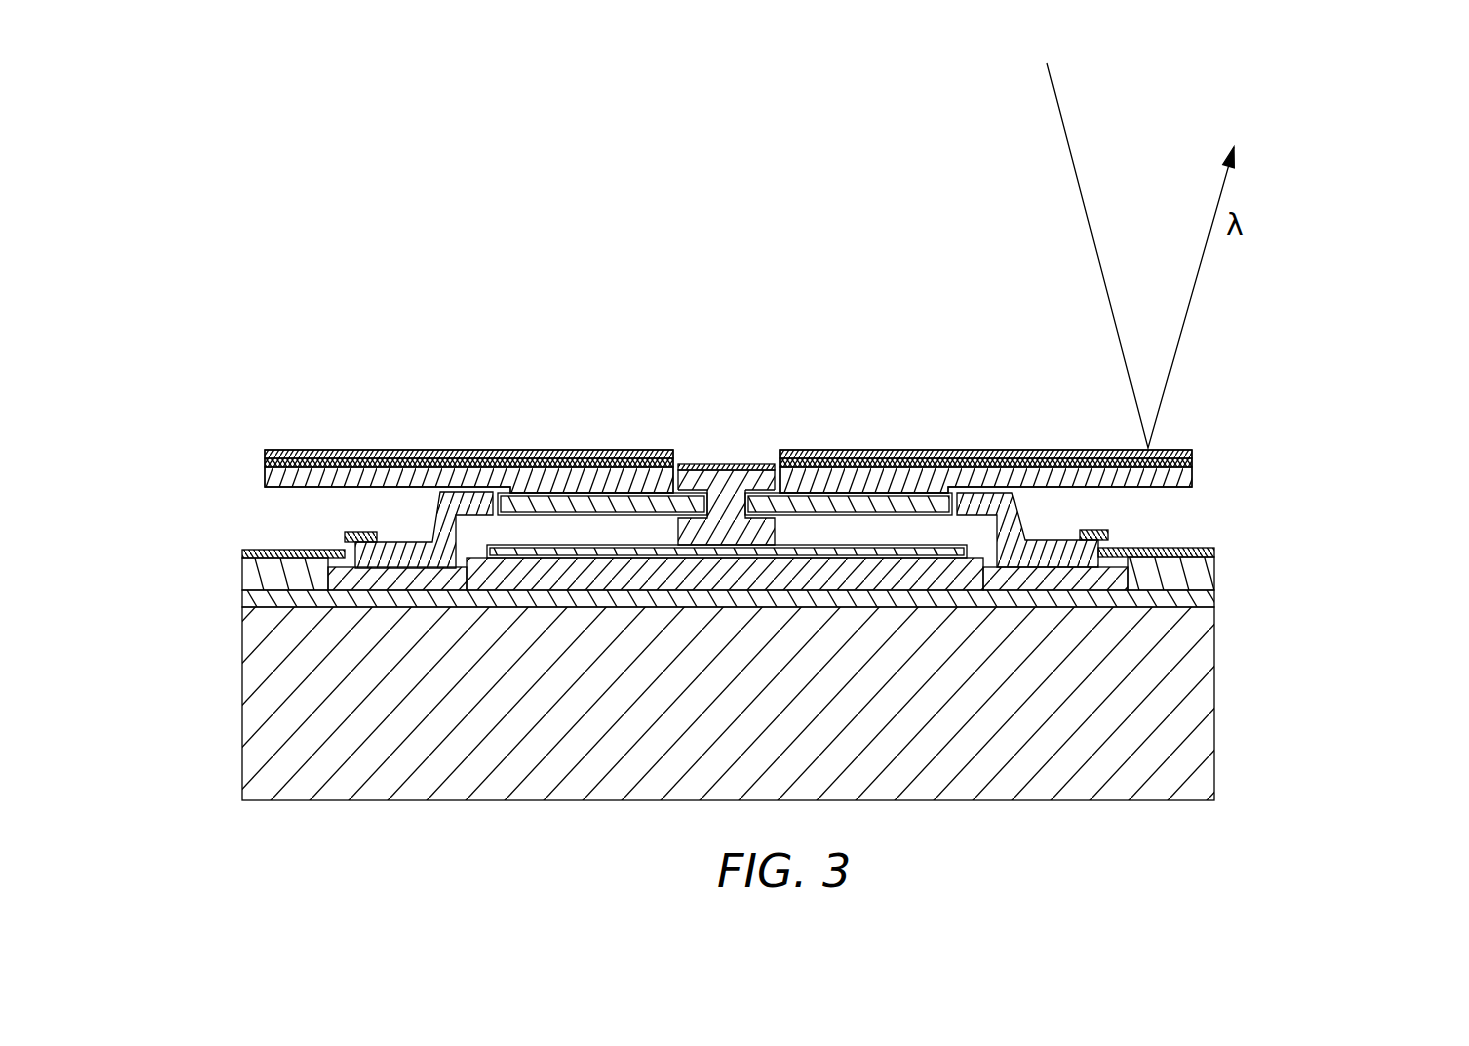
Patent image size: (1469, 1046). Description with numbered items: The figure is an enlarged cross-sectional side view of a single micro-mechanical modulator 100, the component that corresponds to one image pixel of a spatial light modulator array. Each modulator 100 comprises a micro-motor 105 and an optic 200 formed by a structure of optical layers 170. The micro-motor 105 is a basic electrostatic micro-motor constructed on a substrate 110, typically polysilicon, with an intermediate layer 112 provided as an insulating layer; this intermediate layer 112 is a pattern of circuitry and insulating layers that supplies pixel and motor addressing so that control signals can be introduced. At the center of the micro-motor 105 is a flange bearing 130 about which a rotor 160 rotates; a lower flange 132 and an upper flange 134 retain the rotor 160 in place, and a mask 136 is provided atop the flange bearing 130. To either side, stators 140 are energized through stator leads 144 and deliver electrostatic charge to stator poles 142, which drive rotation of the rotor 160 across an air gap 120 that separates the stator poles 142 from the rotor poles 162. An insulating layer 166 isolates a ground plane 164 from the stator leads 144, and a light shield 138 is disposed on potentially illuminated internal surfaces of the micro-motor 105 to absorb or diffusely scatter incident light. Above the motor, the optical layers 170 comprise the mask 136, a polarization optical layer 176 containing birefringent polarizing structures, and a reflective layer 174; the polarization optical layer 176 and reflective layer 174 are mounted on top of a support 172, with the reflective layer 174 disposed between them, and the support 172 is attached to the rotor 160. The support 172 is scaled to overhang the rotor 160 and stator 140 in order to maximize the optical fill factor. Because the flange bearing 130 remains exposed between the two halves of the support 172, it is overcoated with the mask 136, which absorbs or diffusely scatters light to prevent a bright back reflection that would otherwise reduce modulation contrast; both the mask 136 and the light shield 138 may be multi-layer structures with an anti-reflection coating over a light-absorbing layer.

The modulator 100 is at (337, 200).
The micro-motor 105 is at (1353, 485).
The substrate 110 is at (1210, 663).
The intermediate layer 112 is at (1215, 597).
The air gap 120 is at (1044, 414).
The flange bearing 130 is at (751, 462).
The lower flange 132 is at (697, 532).
The upper flange 134 is at (700, 464).
The mask 136 is at (737, 464).
The light shield 138 is at (242, 553).
The stator 140 is at (1088, 540).
The stator pole 142 is at (970, 515).
The stator lead 144 is at (377, 583).
The rotor 160 is at (925, 450).
The rotor pole 162 is at (928, 503).
The ground plane 164 is at (500, 542).
The insulating layer 166 is at (1222, 570).
The optical layers 170 is at (416, 417).
The support 172 is at (888, 450).
The reflective layer 174 is at (343, 450).
The polarization optical layer 176 is at (438, 450).
The optic 200 is at (1192, 447).